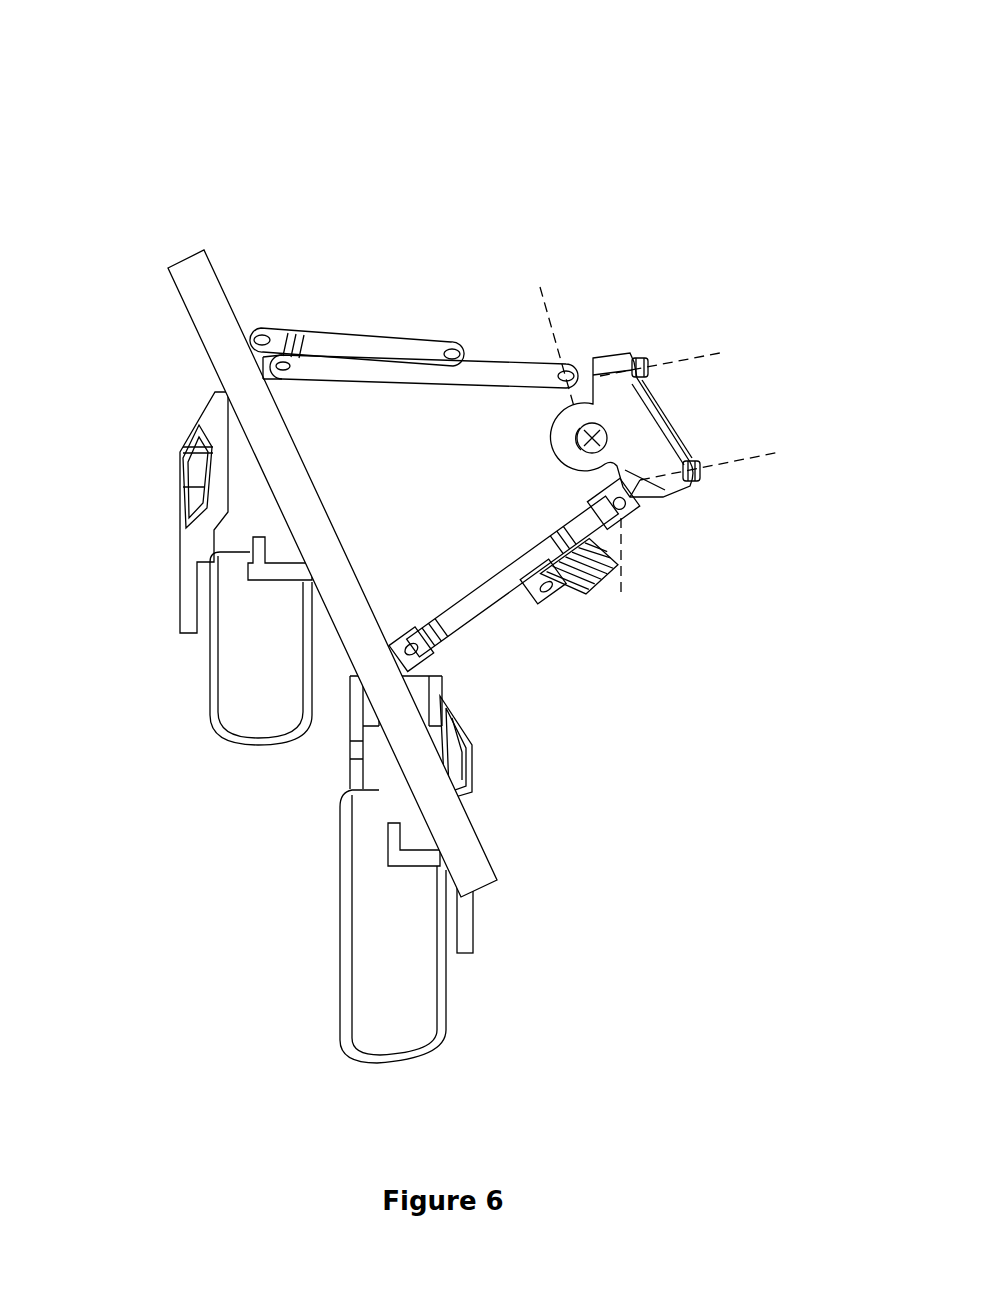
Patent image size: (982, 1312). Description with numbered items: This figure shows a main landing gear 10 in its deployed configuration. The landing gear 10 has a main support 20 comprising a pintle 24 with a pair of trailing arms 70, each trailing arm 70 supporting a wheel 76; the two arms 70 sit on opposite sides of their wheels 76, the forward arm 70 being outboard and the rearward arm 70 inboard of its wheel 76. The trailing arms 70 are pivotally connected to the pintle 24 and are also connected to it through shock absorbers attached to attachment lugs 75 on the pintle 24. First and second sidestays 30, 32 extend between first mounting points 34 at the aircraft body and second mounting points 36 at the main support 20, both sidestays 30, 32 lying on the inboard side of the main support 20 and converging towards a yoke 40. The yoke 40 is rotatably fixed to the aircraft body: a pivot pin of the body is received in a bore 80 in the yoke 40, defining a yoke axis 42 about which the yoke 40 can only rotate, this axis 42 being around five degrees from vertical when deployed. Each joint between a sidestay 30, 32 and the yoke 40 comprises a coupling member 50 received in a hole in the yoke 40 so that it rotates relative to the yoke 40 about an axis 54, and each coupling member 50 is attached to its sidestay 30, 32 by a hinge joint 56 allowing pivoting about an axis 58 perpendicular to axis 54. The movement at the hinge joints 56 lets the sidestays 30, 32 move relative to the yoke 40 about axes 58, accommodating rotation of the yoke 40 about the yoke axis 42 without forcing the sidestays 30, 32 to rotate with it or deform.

The main landing gear 10 is at (622, 95).
The main support 20 is at (187, 170).
The pintle 24 is at (200, 290).
The first sidestay 30 is at (608, 670).
The second sidestay 32 is at (448, 452).
The first mounting point 34 is at (582, 308).
The second mounting point 36 is at (265, 302).
The yoke 40 is at (624, 431).
The yoke axis 42 is at (555, 460).
The coupling member 50 is at (640, 362).
The axis 54 is at (700, 353).
The hinge joint 56 is at (565, 335).
The axis 58 is at (545, 307).
The trailing arm 70 is at (208, 500).
The attachment lug 75 is at (255, 522).
The wheel 76 is at (247, 638).
The bore 80 is at (587, 447).